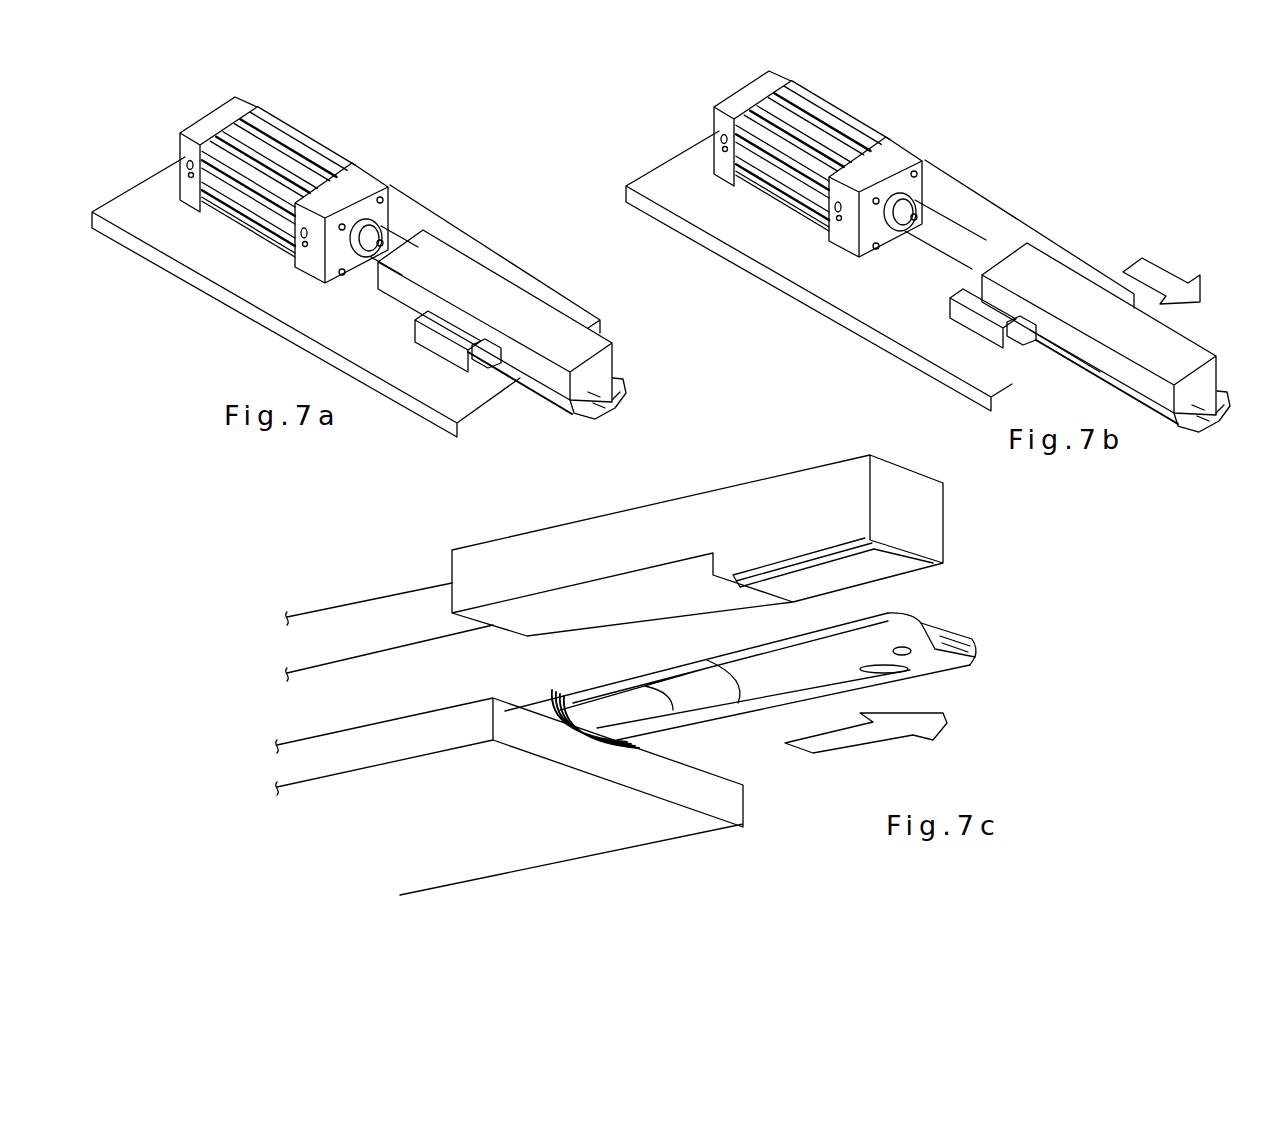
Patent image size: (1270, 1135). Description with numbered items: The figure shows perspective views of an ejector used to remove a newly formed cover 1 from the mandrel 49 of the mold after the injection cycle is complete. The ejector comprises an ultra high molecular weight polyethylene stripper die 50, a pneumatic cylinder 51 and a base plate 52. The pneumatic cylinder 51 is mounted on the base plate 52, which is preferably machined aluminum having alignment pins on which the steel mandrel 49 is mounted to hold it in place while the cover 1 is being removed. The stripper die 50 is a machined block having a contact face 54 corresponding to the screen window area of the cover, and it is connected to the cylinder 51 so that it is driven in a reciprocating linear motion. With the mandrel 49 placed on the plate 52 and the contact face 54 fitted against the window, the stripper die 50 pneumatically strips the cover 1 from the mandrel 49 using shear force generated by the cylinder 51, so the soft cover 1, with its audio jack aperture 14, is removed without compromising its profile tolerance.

In FIG. 7A, the cover 1 is at (577, 420).
In FIG. 7B, the cover 1 is at (1177, 437).
In FIG. 7C, the cover 1 is at (978, 660).
In FIG. 7C, the aperture 14 is at (977, 647).
In FIG. 7A, the mandrel 49 is at (455, 367).
In FIG. 7B, the mandrel 49 is at (1003, 330).
In FIG. 7C, the mandrel 49 is at (743, 723).
In FIG. 7A, the stripper die 50 is at (617, 350).
In FIG. 7B, the stripper die 50 is at (1186, 348).
In FIG. 7C, the stripper die 50 is at (945, 520).
In FIG. 7A, the pneumatic cylinder 51 is at (348, 188).
In FIG. 7B, the pneumatic cylinder 51 is at (882, 162).
In FIG. 7A, the base plate 52 is at (220, 300).
In FIG. 7B, the base plate 52 is at (850, 333).
In FIG. 7C, the base plate 52 is at (750, 813).
In FIG. 7C, the contact face 54 is at (880, 573).